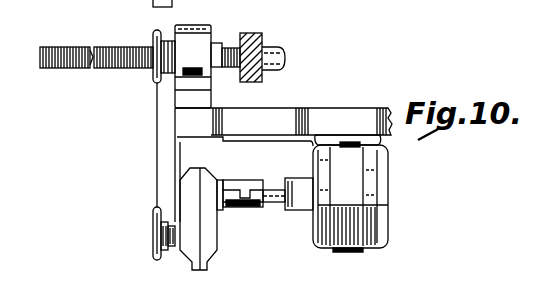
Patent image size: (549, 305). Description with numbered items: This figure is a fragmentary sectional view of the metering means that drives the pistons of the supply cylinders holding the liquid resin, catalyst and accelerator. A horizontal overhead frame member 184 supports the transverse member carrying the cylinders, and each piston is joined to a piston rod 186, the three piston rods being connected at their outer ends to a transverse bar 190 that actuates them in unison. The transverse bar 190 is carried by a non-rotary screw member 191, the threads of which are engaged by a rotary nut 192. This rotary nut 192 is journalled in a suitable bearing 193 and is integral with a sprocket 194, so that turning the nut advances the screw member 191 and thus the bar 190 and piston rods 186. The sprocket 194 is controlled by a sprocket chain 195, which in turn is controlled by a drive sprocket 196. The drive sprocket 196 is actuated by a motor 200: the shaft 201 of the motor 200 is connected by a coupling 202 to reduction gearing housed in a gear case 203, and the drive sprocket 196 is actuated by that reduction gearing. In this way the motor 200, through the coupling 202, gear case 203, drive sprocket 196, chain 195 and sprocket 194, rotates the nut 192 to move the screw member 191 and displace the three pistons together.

The horizontal overhead frame member 184 is at (340, 114).
The piston rod 186 is at (283, 60).
The transverse bar 190 is at (258, 35).
The non-rotary screw member 191 is at (63, 50).
The rotary nut 192 is at (219, 43).
The bearing 193 is at (202, 19).
The sprocket 194 is at (153, 33).
The sprocket chain 195 is at (155, 118).
The drive sprocket 196 is at (153, 233).
The motor 200 is at (384, 188).
The shaft 201 is at (270, 205).
The coupling 202 is at (255, 172).
The gear case 203 is at (213, 245).